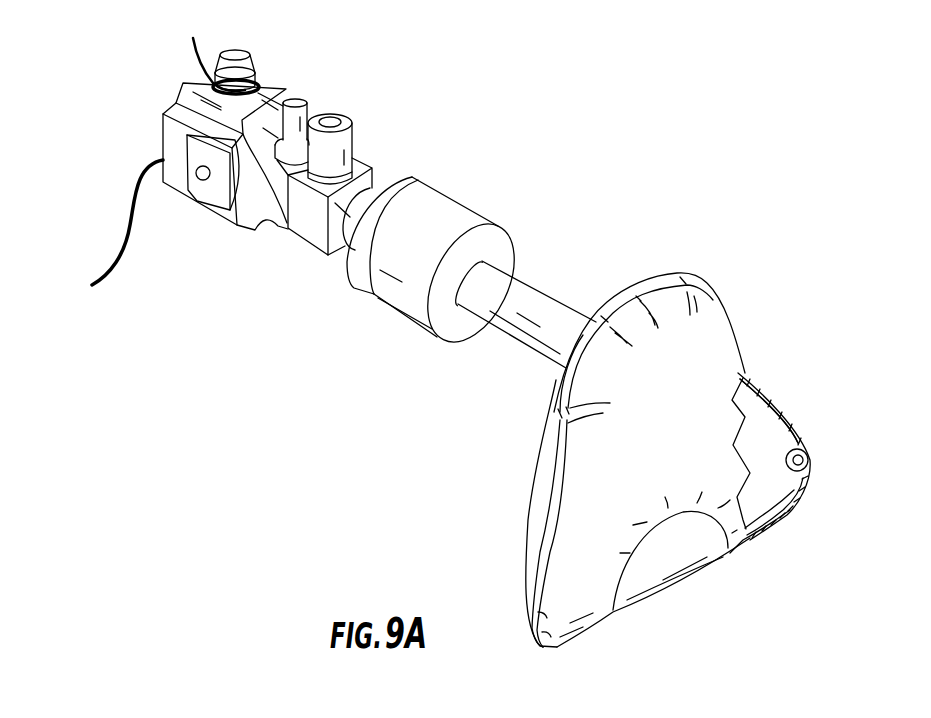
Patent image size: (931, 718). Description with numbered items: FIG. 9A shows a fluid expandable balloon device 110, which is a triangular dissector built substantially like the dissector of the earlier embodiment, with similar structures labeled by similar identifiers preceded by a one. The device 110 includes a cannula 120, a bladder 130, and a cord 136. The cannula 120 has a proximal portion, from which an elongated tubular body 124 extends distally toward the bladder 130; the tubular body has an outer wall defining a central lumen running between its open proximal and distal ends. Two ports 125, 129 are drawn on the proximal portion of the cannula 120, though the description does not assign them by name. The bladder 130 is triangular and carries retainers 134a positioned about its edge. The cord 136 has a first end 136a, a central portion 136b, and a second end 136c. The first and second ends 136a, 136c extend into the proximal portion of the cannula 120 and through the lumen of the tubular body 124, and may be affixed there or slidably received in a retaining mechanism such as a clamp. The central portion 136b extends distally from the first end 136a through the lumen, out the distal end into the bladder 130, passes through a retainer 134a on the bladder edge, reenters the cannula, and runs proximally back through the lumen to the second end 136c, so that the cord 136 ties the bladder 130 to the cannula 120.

The fluid expandable balloon device 110 is at (546, 118).
The cannula 120 is at (497, 222).
The elongated tubular body 124 is at (568, 318).
The port 125 is at (296, 100).
The port 129 is at (346, 113).
The bladder 130 is at (708, 282).
The retainer 134a is at (808, 459).
The cord 136 is at (768, 403).
The first end 136a is at (211, 55).
The central portion 136b is at (797, 422).
The second end 136c is at (90, 284).